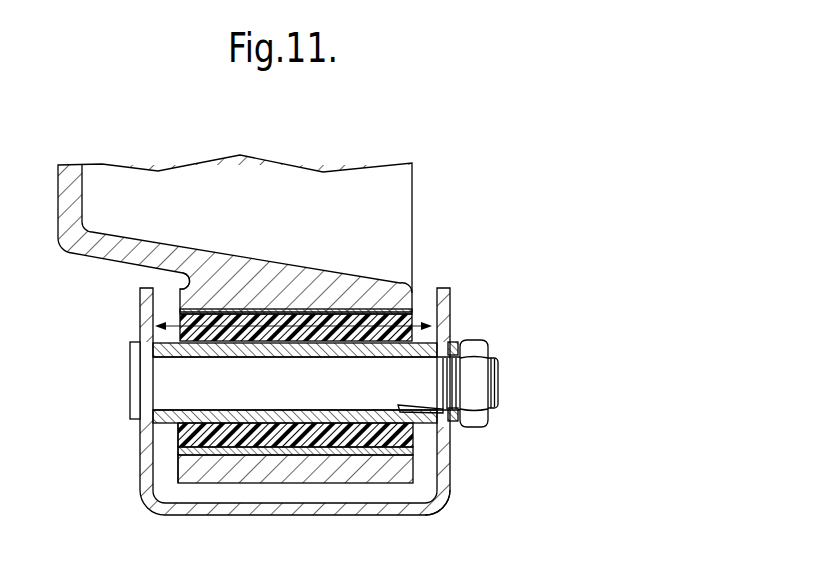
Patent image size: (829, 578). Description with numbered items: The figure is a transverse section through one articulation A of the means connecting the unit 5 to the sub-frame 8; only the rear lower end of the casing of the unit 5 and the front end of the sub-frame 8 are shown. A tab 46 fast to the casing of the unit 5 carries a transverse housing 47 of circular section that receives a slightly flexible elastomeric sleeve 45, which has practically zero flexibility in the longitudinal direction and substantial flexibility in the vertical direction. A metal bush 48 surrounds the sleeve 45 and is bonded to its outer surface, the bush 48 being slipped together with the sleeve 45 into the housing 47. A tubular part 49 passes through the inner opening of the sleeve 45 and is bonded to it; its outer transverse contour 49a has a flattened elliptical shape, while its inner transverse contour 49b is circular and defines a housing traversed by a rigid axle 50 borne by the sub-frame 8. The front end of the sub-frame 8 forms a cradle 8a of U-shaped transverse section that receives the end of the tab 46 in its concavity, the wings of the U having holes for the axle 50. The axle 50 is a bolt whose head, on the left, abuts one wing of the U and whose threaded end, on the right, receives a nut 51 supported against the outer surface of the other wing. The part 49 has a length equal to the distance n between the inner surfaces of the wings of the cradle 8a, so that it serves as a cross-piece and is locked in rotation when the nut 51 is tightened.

The unit 5 is at (395, 200).
The sub-frame 8 is at (458, 469).
The cradle 8a is at (435, 503).
The sleeve 45 is at (233, 442).
The tab 46 is at (200, 273).
The transverse housing 47 is at (397, 310).
The metal bush 48 is at (333, 452).
The tubular part 49 is at (163, 420).
The outer transverse contour 49a is at (153, 352).
The inner transverse contour 49b is at (488, 410).
The axle 50 is at (158, 397).
The nut 51 is at (468, 375).
The articulation A is at (168, 451).
The distance between inner surfaces of the wings n is at (420, 320).